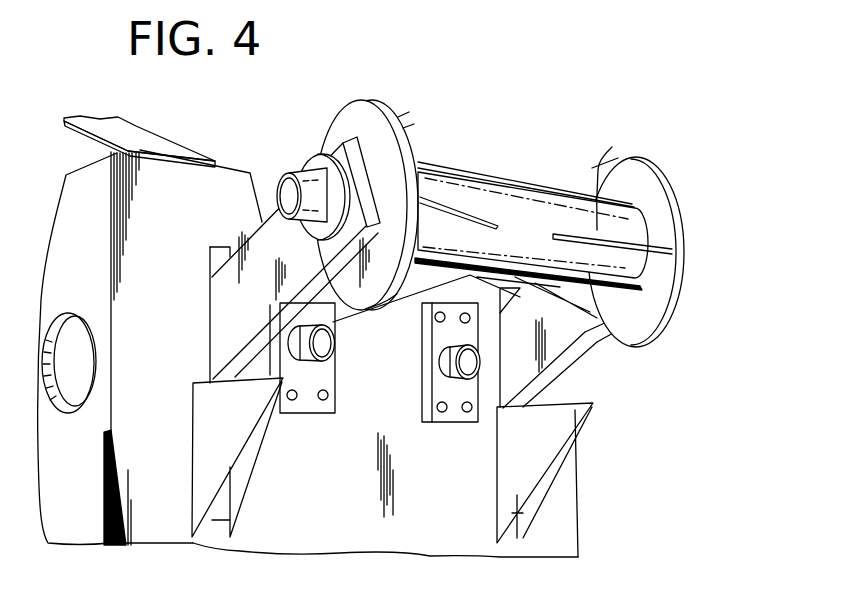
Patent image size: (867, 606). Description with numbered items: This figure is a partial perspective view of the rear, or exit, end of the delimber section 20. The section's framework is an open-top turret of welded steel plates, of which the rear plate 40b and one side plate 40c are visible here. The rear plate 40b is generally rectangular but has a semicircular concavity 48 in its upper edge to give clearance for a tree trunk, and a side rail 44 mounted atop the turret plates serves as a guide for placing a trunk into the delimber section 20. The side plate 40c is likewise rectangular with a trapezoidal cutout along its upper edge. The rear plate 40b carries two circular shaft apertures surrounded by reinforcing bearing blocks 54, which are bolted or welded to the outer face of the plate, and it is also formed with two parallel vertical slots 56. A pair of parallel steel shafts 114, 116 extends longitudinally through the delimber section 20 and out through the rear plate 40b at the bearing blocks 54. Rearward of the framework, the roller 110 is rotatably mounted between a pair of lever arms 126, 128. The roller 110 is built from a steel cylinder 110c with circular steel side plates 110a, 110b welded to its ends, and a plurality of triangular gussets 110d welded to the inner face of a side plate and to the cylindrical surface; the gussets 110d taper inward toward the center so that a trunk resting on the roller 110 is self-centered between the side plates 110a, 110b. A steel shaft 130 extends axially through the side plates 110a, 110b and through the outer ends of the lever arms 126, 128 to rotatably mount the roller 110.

The delimber section 20 is at (214, 130).
The side rail 44 is at (142, 125).
The semicircular concavity 48 is at (265, 213).
The steel shaft 130 is at (290, 188).
The vertical slot 56 is at (214, 247).
The lever arm 128 is at (258, 321).
The side plate 40c is at (97, 503).
The rear plate 40b is at (335, 503).
The reinforcing bearing block 54 is at (422, 357).
The steel shaft 116 is at (327, 352).
The steel shaft 114 is at (466, 378).
The lever arm 126 is at (577, 343).
The roller 110 is at (539, 206).
The circular steel side plate 110a is at (373, 118).
The circular steel side plate 110b is at (683, 223).
The steel cylinder 110c is at (540, 247).
The triangular gusset 110d is at (447, 197).